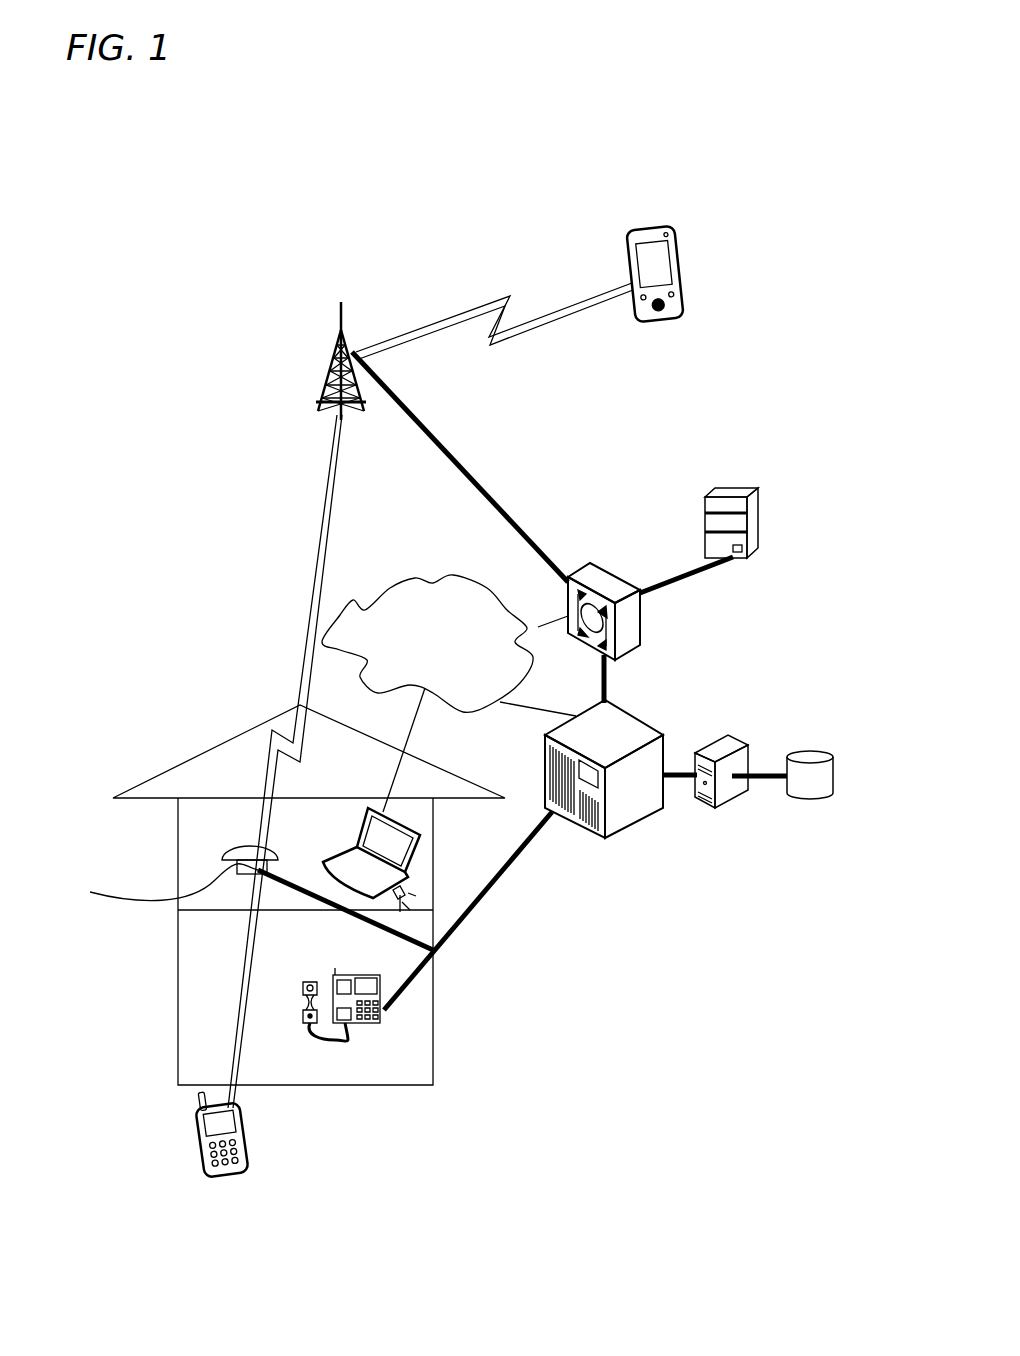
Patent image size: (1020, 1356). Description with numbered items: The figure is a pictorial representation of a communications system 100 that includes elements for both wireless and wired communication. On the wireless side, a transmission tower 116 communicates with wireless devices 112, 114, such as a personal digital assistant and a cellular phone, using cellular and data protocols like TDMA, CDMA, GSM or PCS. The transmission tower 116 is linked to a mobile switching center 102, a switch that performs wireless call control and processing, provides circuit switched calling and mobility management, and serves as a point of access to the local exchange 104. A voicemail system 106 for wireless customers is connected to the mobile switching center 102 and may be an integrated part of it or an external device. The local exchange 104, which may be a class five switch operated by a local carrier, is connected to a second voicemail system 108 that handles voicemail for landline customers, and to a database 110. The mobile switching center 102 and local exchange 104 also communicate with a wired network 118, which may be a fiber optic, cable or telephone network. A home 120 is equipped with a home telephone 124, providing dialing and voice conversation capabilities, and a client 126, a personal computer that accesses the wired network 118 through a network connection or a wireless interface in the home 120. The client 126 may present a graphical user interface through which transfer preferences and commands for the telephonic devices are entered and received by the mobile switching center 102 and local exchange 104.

The communications system 100 is at (175, 232).
The mobile switching center 102 is at (592, 565).
The local exchange 104 is at (608, 840).
The voicemail system 106 is at (722, 512).
The voicemail system 108 is at (742, 792).
The database 110 is at (803, 757).
The wireless device 112 is at (685, 234).
The wireless device 114 is at (207, 1167).
The transmission tower 116 is at (325, 402).
The wired network 118 is at (443, 666).
The home 120 is at (178, 768).
The home telephone 124 is at (378, 1020).
The client 126 is at (423, 868).